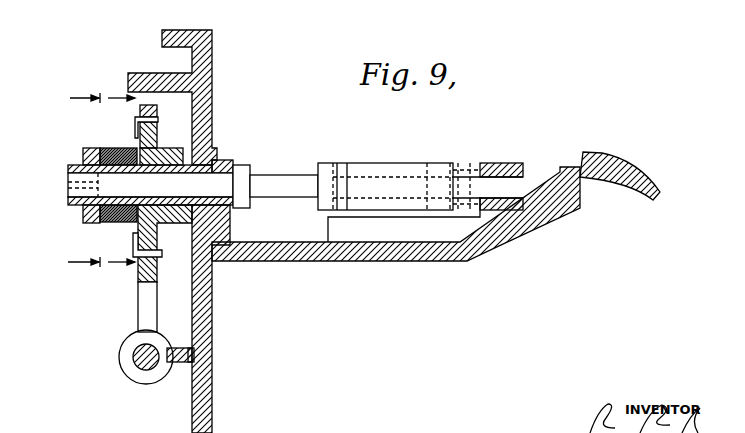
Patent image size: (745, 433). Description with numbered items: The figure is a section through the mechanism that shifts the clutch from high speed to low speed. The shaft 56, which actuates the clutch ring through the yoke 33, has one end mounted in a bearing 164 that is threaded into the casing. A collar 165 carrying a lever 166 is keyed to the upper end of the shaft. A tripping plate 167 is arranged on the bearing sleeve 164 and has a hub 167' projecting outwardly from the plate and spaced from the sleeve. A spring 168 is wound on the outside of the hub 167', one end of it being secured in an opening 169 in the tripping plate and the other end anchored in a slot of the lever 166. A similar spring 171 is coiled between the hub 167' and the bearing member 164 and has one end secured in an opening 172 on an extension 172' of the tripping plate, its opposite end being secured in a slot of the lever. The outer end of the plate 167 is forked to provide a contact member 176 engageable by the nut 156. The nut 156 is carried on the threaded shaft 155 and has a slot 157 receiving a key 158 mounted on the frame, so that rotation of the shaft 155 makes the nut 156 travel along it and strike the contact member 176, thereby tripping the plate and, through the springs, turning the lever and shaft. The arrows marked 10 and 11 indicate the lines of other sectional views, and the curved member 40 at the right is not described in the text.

The section line 10 is at (121, 182).
The section line 11 is at (83, 182).
The yoke 33 is at (410, 164).
The handle 40 is at (640, 182).
The shaft 56 is at (288, 173).
The threaded shaft 155 is at (143, 362).
The nut 156 is at (155, 375).
The slot 157 is at (170, 343).
The key 158 is at (190, 358).
The bearing 164 is at (212, 153).
The collar 165 is at (67, 203).
The lever 166 is at (85, 148).
The tripping plate 167 is at (165, 253).
The hub 167' is at (122, 241).
The spring 168 is at (120, 148).
The opening 169 is at (196, 319).
The spring 171 is at (83, 215).
The opening 172 is at (163, 117).
The extension 172' is at (166, 142).
The contact member 176 is at (155, 330).